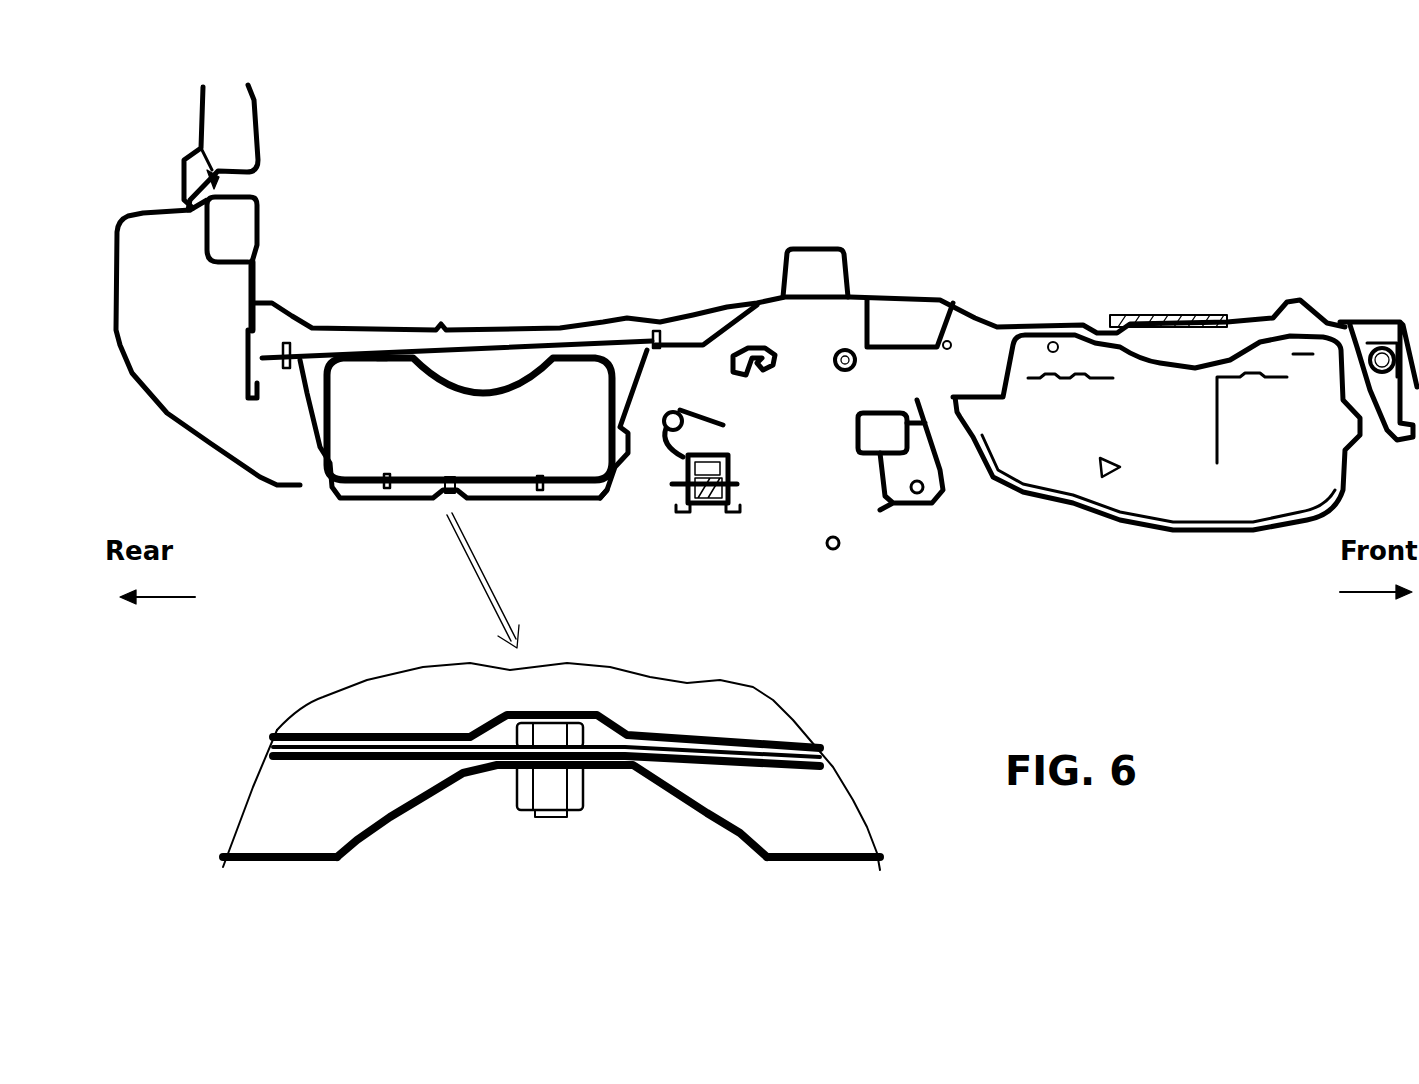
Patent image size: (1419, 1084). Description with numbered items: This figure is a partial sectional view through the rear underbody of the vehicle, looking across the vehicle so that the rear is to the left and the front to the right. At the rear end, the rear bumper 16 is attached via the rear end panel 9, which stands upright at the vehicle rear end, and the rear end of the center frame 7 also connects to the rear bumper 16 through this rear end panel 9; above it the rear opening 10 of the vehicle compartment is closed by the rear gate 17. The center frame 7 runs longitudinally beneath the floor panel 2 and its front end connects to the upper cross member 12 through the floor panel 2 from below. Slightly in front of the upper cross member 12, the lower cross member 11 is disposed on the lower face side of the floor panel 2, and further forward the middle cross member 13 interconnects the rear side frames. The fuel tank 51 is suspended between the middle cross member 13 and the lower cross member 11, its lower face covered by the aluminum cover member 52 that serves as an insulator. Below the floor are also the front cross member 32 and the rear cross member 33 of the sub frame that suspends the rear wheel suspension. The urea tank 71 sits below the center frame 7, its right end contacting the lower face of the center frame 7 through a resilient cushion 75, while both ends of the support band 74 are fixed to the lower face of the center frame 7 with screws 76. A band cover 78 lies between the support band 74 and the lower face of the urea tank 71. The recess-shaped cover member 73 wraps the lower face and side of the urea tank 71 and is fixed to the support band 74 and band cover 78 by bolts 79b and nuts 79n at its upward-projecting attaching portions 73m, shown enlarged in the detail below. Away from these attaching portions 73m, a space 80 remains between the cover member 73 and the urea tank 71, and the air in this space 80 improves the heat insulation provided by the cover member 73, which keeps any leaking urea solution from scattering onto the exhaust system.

The floor panel 2 is at (705, 305).
The center frame 7 is at (367, 325).
The rear end panel 9 is at (247, 292).
The rear opening 10 is at (208, 163).
The lower cross member 11 is at (960, 327).
The cross member 12 is at (847, 267).
The middle cross member 13 is at (1352, 310).
The rear bumper 16 is at (140, 393).
The rear gate 17 is at (267, 147).
The front cross member 32 is at (940, 507).
The rear cross member 33 is at (733, 470).
The fuel tank 51 is at (1248, 347).
The cover member 52 is at (1255, 537).
The urea tank 71 is at (519, 380).
The cover member 73 is at (523, 499).
The attaching portions 73m is at (447, 500).
The support band 74 is at (303, 383).
The resilient cushion 75 is at (383, 360).
The screws 76 is at (292, 345).
The band cover 78 is at (820, 743).
The bolts 79b is at (590, 733).
The nuts 79n is at (583, 786).
The space 80 is at (593, 490).